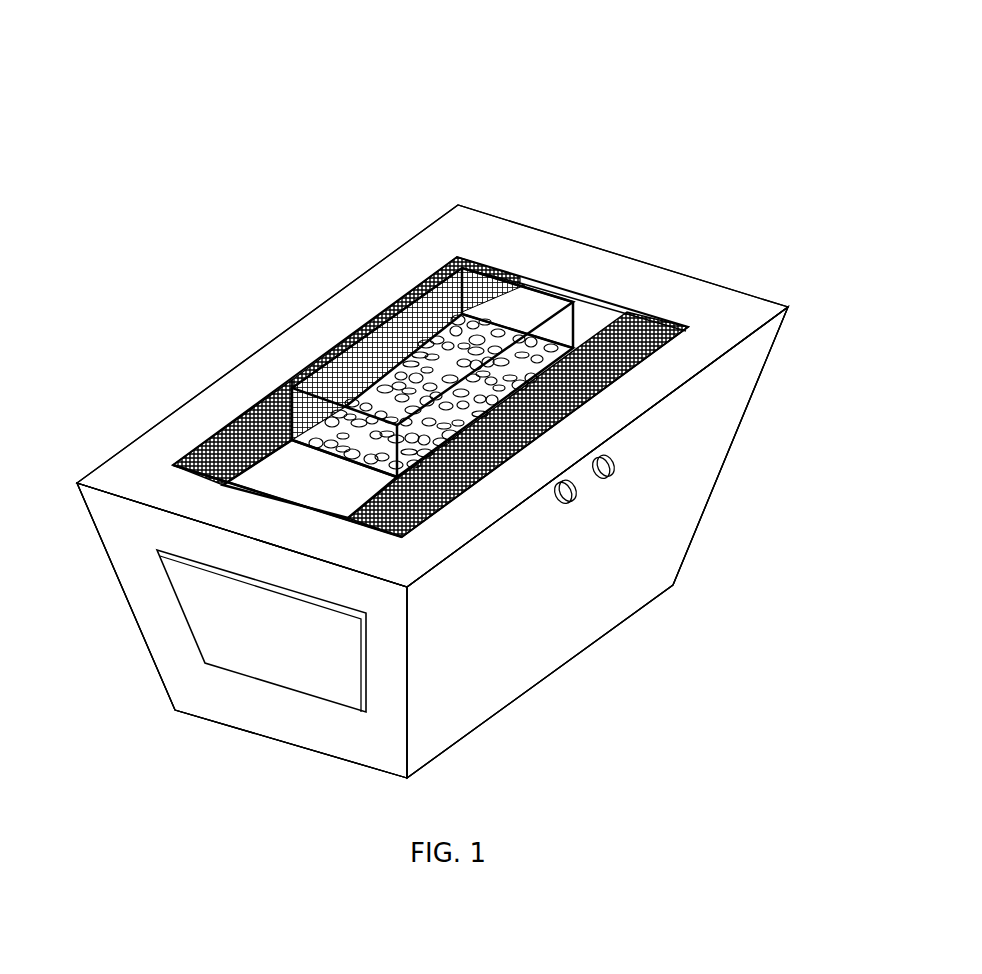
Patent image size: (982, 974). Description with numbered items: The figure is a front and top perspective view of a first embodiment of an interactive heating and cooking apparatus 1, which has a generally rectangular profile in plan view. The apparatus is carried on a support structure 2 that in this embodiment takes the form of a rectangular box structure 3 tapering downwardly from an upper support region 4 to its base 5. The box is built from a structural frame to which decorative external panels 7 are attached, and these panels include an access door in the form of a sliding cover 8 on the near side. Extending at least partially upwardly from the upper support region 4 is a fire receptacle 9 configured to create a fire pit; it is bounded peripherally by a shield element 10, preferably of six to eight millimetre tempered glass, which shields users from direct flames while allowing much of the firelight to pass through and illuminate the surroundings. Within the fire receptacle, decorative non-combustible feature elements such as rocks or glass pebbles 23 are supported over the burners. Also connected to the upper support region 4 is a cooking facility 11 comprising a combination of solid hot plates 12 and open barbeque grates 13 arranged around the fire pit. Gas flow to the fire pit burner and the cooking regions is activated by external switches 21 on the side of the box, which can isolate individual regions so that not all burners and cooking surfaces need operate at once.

The interactive heating and cooking apparatus 1 is at (683, 107).
The support structure 2 is at (770, 391).
The rectangular box structure 3 is at (713, 443).
The upper support region 4 is at (230, 389).
The base 5 is at (175, 710).
The decorative external panels 7 is at (248, 703).
The sliding cover 8 is at (207, 632).
The fire receptacle 9 is at (590, 315).
The shield element 10 is at (290, 378).
The cooking facility 11 is at (683, 318).
The solid hot plates 12 is at (336, 479).
The open barbeque grates 13 is at (243, 442).
The external switches 21 is at (573, 503).
The glass pebbles 23 is at (445, 333).